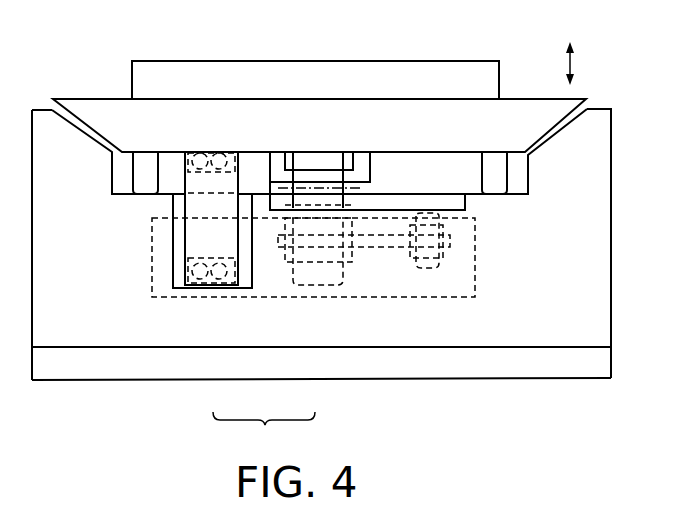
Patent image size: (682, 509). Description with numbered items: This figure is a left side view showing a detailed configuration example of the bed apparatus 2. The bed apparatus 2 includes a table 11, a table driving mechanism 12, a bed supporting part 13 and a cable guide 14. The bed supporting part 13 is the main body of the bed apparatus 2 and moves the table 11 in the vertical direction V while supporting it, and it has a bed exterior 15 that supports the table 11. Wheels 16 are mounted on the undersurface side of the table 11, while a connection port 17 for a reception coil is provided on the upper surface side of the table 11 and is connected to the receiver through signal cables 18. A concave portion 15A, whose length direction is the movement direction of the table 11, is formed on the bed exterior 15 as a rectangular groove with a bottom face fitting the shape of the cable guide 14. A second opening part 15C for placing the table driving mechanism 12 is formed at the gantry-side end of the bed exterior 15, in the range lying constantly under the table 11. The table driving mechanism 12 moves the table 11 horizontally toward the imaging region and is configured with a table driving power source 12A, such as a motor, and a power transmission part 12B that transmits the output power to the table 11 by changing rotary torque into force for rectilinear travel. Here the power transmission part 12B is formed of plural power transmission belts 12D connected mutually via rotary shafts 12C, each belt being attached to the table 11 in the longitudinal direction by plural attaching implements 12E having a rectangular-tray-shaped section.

The bed apparatus 2 is at (522, 88).
The table 11 is at (107, 98).
The table driving mechanism 12 is at (264, 430).
The table driving power source 12A is at (213, 297).
The power transmission part 12B is at (318, 288).
The rotary shafts 12C is at (363, 220).
The power transmission belts 12D is at (428, 213).
The attaching implements 12E is at (269, 163).
The bed supporting part 13 is at (613, 359).
The cable guide 14 is at (185, 177).
The bed exterior 15 is at (611, 130).
The concave portion 15A is at (178, 267).
The second opening part 15C is at (443, 205).
The wheels 16 is at (132, 178).
The connection port 17 is at (132, 83).
The signal cables 18 is at (218, 167).
The vertical direction V is at (572, 68).